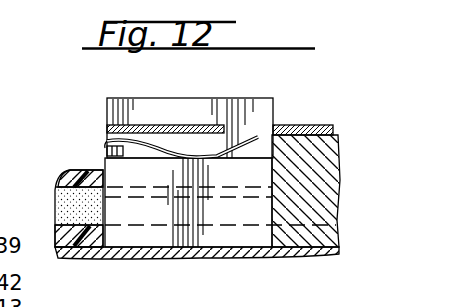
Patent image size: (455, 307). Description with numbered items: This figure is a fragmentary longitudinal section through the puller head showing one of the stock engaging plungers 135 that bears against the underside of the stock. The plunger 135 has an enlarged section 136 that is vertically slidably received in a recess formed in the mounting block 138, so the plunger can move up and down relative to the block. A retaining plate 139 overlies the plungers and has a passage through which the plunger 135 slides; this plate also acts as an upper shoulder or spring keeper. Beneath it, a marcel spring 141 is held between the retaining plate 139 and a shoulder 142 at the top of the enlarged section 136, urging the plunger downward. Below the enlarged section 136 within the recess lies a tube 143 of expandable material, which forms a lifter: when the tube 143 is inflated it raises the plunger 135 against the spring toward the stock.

The stock engaging plunger 135 is at (273, 99).
The enlarged section 136 is at (268, 173).
The mounting block 138 is at (93, 240).
The retaining plate 139 is at (107, 128).
The marcel spring 141 is at (157, 145).
The shoulder 142 is at (107, 152).
The tube of expandable material 143 is at (60, 200).